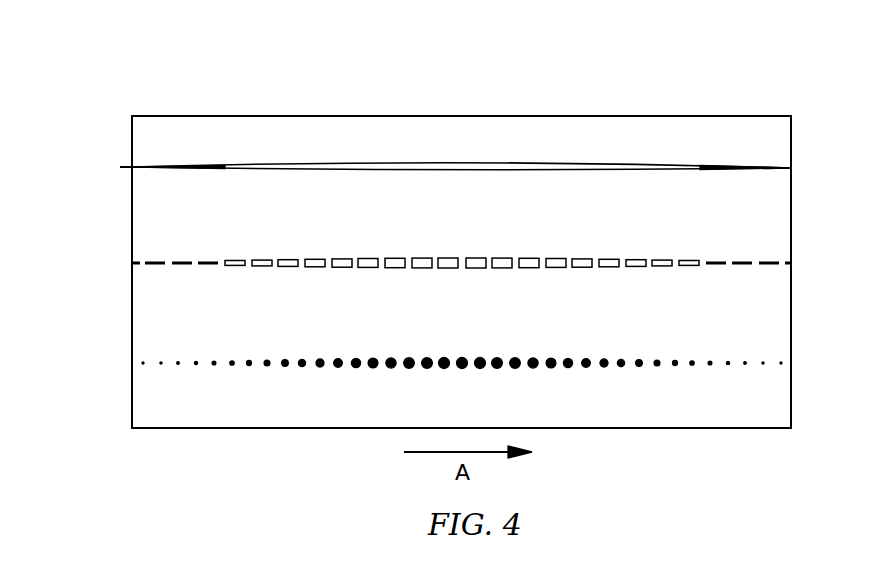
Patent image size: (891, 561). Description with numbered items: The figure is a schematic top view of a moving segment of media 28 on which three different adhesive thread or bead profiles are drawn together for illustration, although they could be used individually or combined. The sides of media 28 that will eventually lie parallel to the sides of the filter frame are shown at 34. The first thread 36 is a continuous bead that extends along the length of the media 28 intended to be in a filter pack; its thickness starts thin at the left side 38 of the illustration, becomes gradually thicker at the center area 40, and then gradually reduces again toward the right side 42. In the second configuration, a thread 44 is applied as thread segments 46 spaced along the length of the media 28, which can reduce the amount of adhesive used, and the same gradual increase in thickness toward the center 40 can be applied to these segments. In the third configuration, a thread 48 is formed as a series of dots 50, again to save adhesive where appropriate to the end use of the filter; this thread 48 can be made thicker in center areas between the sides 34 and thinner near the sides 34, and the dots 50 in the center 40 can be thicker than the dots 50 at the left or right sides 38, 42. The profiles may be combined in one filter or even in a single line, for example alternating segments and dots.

The media 28 is at (792, 220).
The sides of media 34 is at (480, 116).
The first thread 36 is at (223, 167).
The left side 38 is at (132, 167).
The center area 40 is at (417, 155).
The right side 42 is at (792, 153).
The thread 44 is at (498, 258).
The thread segments 46 is at (488, 262).
The thread 48 is at (462, 416).
The dots 50 is at (568, 366).